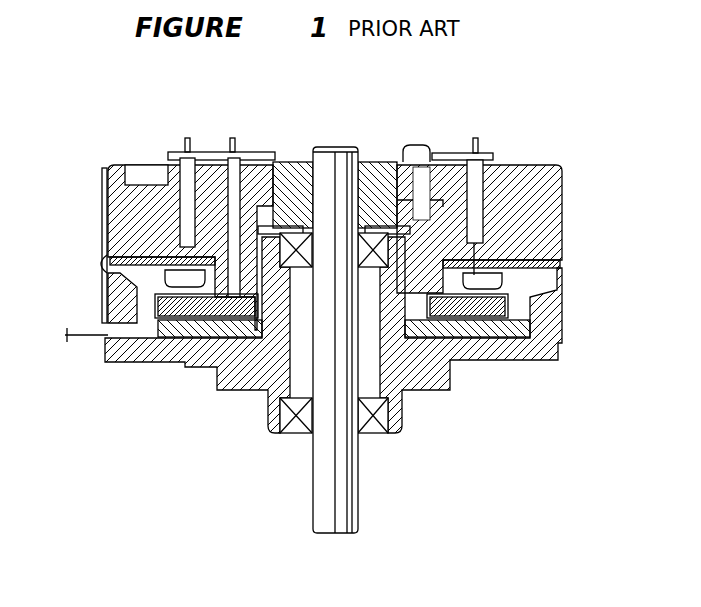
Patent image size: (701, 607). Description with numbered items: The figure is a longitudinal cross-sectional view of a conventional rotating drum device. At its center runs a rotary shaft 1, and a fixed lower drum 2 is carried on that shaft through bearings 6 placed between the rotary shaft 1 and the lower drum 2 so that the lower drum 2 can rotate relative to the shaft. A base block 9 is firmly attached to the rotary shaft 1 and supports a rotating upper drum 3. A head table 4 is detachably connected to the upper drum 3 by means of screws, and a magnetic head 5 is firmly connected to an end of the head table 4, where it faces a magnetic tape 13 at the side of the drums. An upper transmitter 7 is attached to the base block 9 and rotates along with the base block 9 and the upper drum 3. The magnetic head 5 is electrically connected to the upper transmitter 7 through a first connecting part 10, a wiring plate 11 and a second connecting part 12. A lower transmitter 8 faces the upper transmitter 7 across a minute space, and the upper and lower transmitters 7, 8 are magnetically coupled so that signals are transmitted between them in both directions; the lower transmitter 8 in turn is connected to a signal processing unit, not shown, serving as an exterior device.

The rotary shaft 1 is at (322, 480).
The fixed lower drum 2 is at (430, 385).
The rotating upper drum 3 is at (562, 210).
The head table 4 is at (557, 268).
The magnetic head 5 is at (560, 262).
The bearings 6 is at (297, 237).
The upper transmitter 7 is at (505, 308).
The lower transmitter 8 is at (483, 325).
The base block 9 is at (380, 163).
The first connecting part 10 is at (475, 180).
The wiring plate 11 is at (207, 148).
The second connecting part 12 is at (243, 180).
The magnetic tape 13 is at (105, 225).